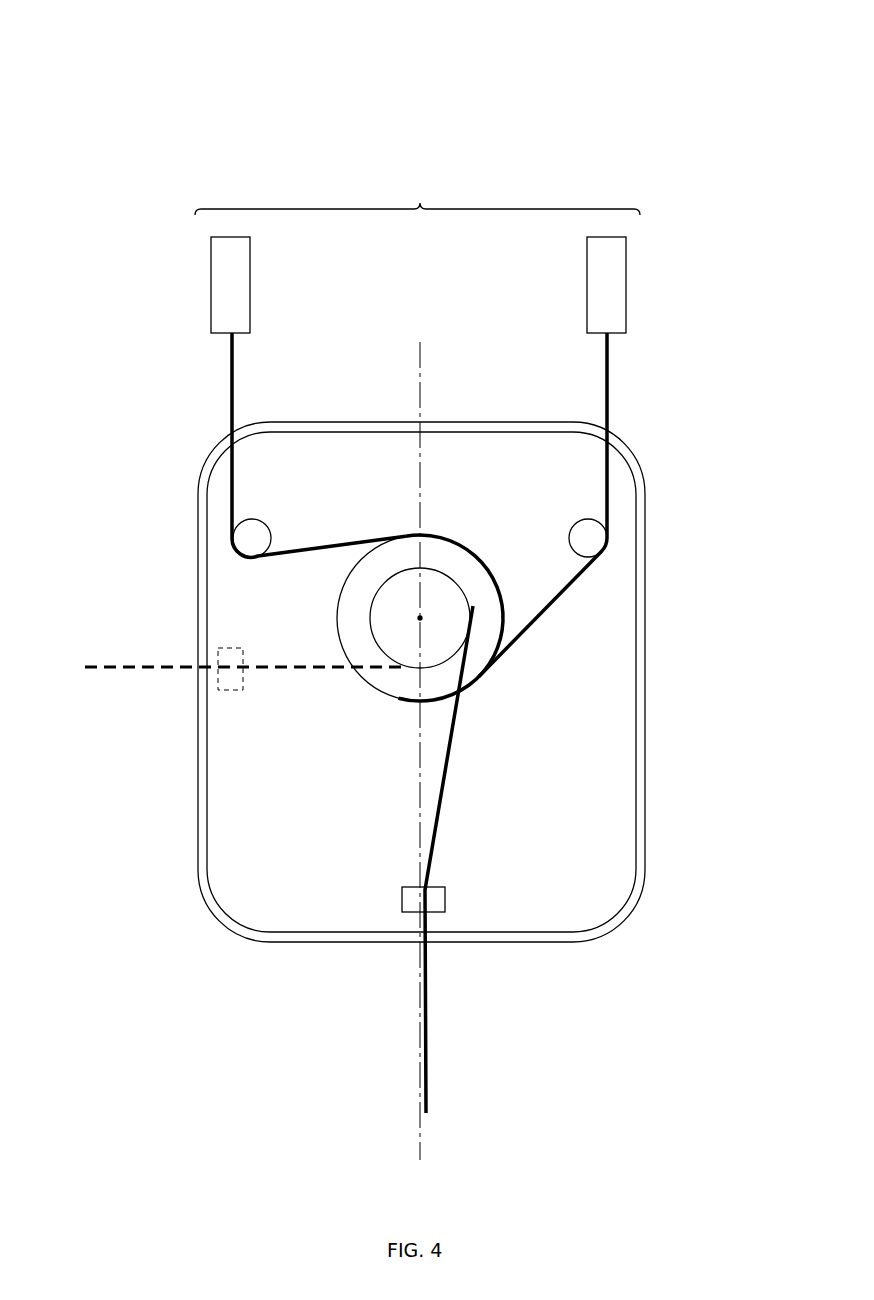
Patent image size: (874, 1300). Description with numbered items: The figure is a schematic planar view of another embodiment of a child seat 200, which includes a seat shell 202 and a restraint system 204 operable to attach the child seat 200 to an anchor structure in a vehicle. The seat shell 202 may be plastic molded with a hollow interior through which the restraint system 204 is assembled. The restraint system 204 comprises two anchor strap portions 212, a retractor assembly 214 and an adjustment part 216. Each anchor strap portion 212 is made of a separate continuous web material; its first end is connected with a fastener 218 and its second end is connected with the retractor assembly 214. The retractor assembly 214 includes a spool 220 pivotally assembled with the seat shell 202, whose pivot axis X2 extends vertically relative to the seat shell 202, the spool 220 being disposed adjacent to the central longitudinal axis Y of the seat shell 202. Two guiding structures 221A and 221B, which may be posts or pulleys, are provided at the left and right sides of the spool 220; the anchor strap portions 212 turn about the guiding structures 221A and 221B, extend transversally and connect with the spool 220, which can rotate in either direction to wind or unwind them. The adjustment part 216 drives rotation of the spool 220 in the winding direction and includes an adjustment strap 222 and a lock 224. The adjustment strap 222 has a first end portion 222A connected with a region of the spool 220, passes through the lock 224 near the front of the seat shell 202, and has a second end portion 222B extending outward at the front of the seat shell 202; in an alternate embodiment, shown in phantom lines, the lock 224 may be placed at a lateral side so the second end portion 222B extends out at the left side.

The child seat 200 is at (58, 26).
The seat shell 202 is at (640, 875).
The restraint system 204 is at (417, 196).
The anchor strap portions 212 is at (232, 390).
The retractor assembly 214 is at (493, 697).
The adjustment part 216 is at (407, 950).
The fastener 218 is at (220, 297).
The spool 220 is at (365, 685).
The guiding structure 221A is at (592, 542).
The guiding structure 221B is at (246, 543).
The adjustment strap 222 is at (428, 1040).
The first end portion 222A is at (485, 612).
The second end portion 222B is at (432, 1110).
The lock 224 is at (445, 900).
The pivot axis X2 is at (420, 618).
The central longitudinal axis Y is at (422, 366).